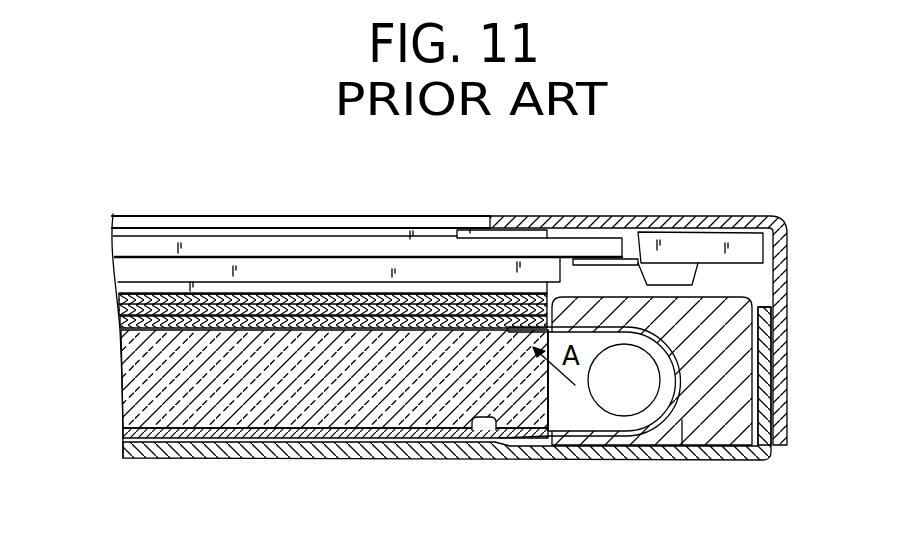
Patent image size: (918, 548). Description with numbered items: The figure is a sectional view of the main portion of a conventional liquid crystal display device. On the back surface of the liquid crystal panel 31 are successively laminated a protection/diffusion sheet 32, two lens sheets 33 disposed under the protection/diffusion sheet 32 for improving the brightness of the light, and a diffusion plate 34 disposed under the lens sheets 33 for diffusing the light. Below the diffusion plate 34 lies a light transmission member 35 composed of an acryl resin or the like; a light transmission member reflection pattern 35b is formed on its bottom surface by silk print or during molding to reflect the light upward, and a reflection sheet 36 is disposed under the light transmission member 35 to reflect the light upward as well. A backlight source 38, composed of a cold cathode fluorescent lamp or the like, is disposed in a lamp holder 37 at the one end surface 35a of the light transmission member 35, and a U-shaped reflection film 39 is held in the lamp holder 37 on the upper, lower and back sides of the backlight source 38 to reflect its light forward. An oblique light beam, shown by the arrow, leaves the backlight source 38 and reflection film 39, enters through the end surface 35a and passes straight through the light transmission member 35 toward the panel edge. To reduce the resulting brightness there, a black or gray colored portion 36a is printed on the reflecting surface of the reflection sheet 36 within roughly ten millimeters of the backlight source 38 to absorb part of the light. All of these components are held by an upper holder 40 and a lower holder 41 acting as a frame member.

The liquid crystal panel 31 is at (103, 230).
The protection/diffusion sheet 32 is at (208, 300).
The lens sheets 33 is at (117, 300).
The diffusion plate 34 is at (125, 335).
The light transmission member 35 is at (123, 390).
The end surface of light transmission member 35a is at (552, 387).
The light transmission member reflection pattern 35b is at (292, 427).
The reflection sheet 36 is at (203, 430).
The black or gray colored portion 36a is at (472, 417).
The lamp holder 37 is at (740, 343).
The backlight source 38 is at (643, 383).
The U-shaped reflection film 39 is at (613, 432).
The upper holder 40 is at (737, 217).
The lower holder 41 is at (672, 462).